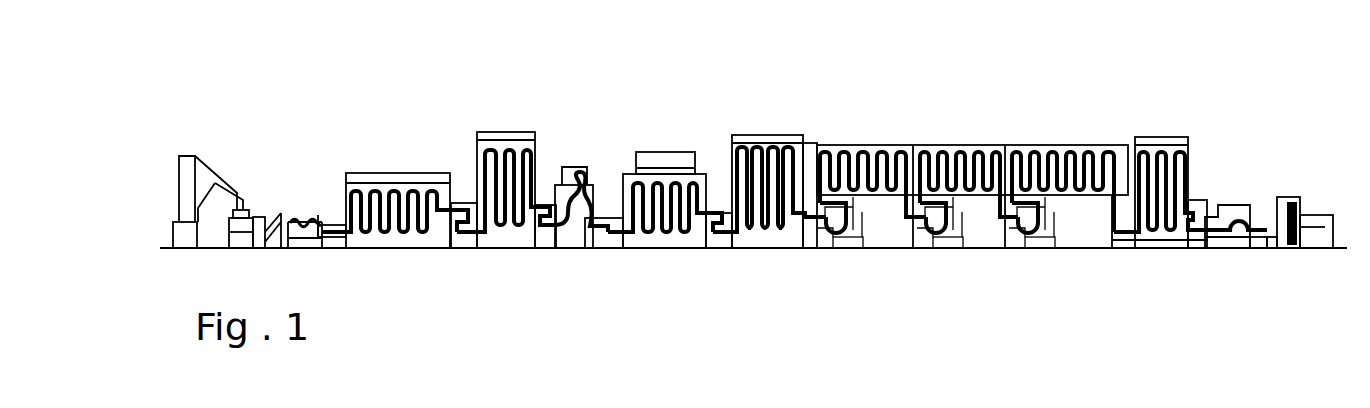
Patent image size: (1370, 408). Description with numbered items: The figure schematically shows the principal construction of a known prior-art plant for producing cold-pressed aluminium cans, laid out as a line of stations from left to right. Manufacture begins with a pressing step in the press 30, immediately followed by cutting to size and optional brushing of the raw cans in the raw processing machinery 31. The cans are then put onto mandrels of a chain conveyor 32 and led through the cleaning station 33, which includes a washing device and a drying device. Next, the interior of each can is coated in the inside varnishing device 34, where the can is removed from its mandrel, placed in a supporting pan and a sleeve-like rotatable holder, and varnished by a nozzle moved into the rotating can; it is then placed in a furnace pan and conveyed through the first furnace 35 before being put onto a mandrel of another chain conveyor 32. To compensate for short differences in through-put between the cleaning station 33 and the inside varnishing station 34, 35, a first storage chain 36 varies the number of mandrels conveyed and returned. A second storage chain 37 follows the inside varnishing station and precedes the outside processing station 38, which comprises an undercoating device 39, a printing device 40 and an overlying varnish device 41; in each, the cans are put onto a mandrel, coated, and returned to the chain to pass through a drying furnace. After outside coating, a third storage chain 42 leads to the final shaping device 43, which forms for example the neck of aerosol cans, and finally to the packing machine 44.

The press 30 is at (219, 156).
The raw processing machinery 31 is at (295, 192).
The chain conveyor 32 is at (333, 227).
The cleaning station 33 is at (418, 155).
The inside varnishing device 34 is at (583, 146).
The first furnace 35 is at (659, 138).
The first storage chain 36 is at (513, 118).
The second storage chain 37 is at (757, 118).
The outside processing station 38 is at (960, 108).
The undercoating device 39 is at (888, 260).
The printing device 40 is at (970, 258).
The overlying varnish device 41 is at (1067, 254).
The third storage chain 42 is at (1163, 118).
The final shaping device 43 is at (1235, 185).
The packing machine 44 is at (1302, 182).